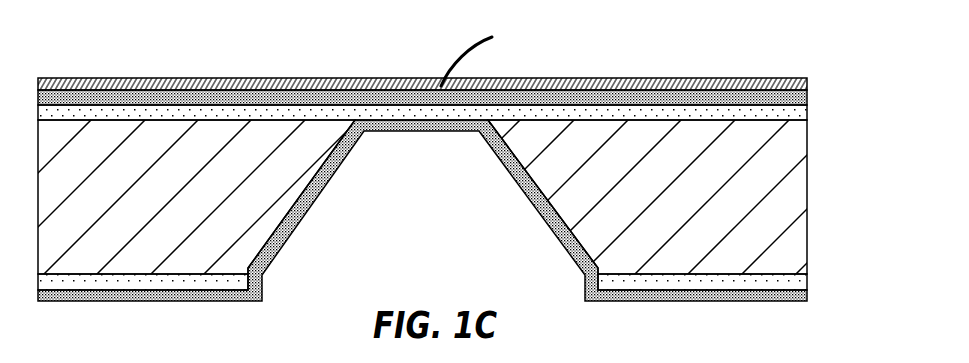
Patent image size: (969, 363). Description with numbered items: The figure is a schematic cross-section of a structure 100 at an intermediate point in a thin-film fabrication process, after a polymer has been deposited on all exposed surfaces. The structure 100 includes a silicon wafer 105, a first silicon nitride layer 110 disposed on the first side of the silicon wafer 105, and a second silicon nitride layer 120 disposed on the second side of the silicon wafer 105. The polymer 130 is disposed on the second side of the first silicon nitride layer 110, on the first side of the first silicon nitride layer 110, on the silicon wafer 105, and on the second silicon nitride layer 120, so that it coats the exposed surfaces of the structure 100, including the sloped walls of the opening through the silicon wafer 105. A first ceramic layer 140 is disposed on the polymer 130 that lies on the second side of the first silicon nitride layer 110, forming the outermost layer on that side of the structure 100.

The structure 100 is at (484, 180).
The silicon wafer 105 is at (797, 197).
The first silicon nitride layer 110 is at (797, 110).
The second silicon nitride layer 120 is at (797, 283).
The polymer 130 is at (797, 94).
The first ceramic layer 140 is at (798, 82).